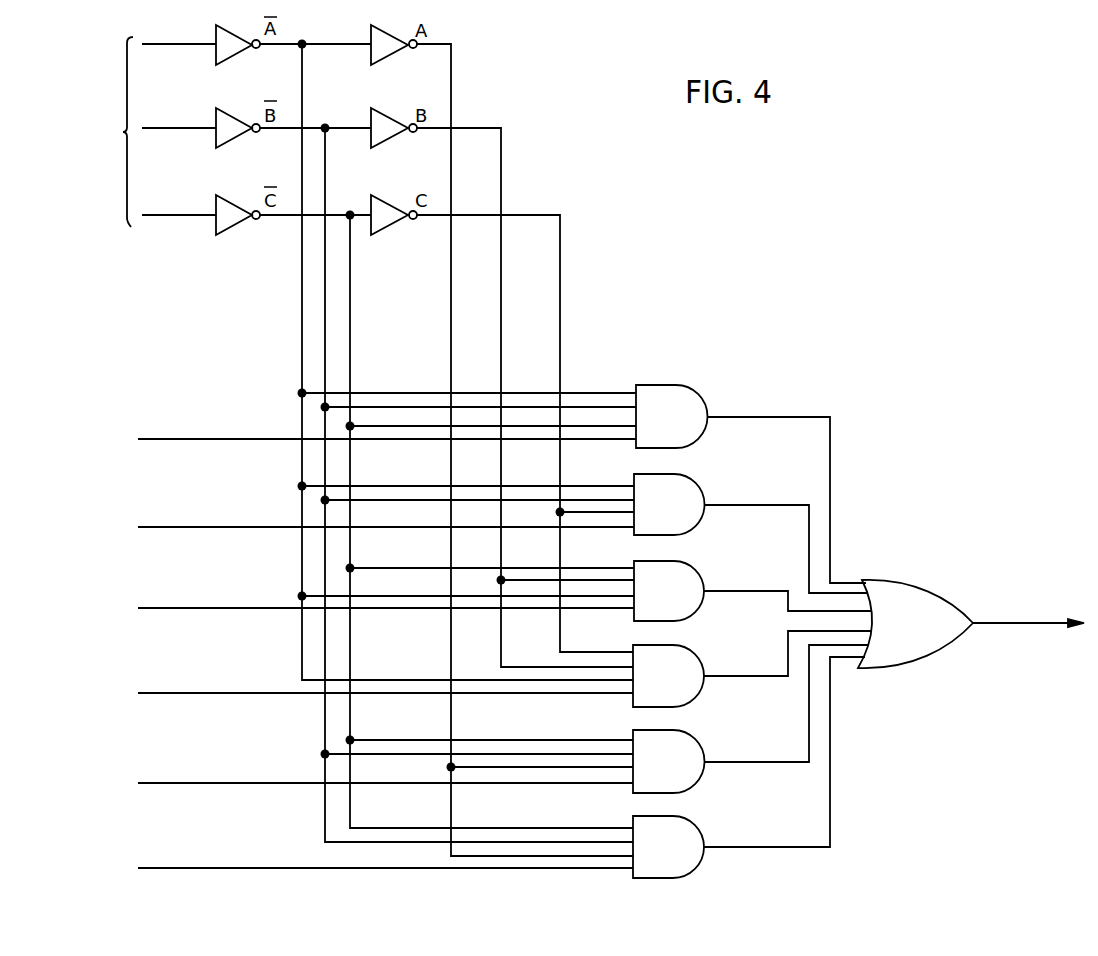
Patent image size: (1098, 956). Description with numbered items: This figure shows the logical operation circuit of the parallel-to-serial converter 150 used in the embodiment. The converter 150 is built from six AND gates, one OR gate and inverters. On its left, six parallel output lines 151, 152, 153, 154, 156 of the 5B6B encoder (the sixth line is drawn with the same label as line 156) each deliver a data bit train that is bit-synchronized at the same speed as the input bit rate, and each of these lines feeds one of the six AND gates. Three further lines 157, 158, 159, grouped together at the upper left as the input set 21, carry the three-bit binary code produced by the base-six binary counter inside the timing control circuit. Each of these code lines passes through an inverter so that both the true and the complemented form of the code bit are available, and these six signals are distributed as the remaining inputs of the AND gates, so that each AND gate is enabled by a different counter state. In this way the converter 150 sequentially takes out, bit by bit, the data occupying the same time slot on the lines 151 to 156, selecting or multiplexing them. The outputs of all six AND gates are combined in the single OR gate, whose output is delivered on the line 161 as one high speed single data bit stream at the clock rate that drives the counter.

The input signal group 21 is at (119, 132).
The line 157 is at (177, 43).
The line 158 is at (177, 127).
The line 159 is at (177, 214).
The parallel output line 151 is at (207, 437).
The parallel output line 152 is at (211, 526).
The parallel output line 153 is at (208, 608).
The parallel output line 154 is at (207, 692).
The parallel output line 156 is at (208, 781).
The parallel-to-serial converter 150 is at (908, 728).
The line 161 is at (1028, 610).